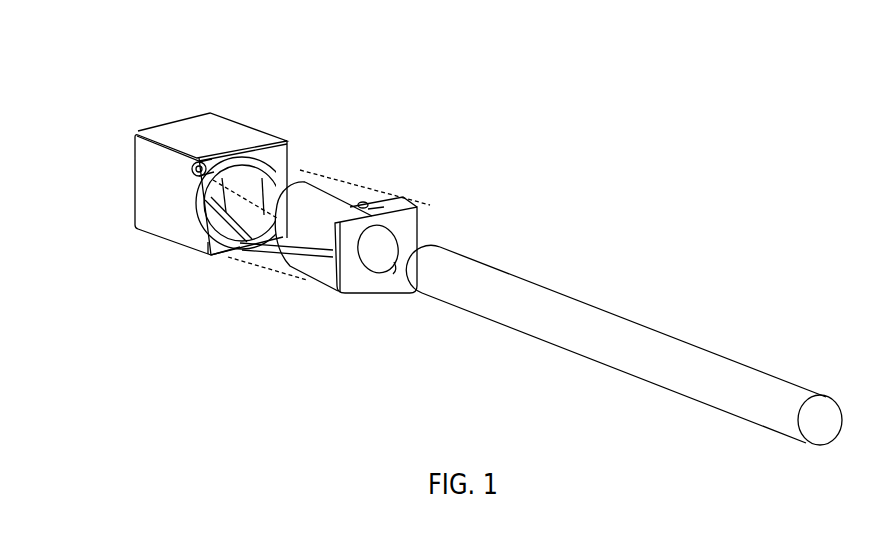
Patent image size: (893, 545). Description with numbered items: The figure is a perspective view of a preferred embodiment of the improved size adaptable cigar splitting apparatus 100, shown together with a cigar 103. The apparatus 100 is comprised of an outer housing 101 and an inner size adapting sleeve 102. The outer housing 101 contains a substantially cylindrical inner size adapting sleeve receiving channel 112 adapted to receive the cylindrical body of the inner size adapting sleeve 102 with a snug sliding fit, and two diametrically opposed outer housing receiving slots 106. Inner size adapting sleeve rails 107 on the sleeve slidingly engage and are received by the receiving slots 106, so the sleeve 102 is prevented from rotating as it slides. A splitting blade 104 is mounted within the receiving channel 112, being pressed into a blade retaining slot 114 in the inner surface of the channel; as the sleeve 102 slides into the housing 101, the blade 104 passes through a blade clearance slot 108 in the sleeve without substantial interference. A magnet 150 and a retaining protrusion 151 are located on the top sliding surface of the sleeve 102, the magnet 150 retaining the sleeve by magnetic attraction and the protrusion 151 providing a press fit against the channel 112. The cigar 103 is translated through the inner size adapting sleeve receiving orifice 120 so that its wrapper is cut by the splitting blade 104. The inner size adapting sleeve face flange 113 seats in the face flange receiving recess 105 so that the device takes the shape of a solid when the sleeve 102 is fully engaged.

The improved size adaptable cigar splitting apparatus 100 is at (222, 366).
The outer housing 101 is at (222, 138).
The inner size adapting sleeve 102 is at (358, 203).
The cigar 103 is at (545, 302).
The splitting blade 104 is at (215, 215).
The face flange receiving recess 105 is at (197, 218).
The outer housing receiving slot 106 is at (200, 199).
The inner size adapting sleeve rail 107 is at (320, 257).
The blade clearance slot 108 is at (377, 275).
The inner size adapting sleeve receiving channel 112 is at (212, 256).
The inner size adapting sleeve face flange 113 is at (418, 233).
The blade retaining slot 114 is at (240, 247).
The inner size adapting sleeve receiving orifice 120 is at (385, 268).
The magnet 150 is at (372, 209).
The retaining protrusion 151 is at (392, 211).